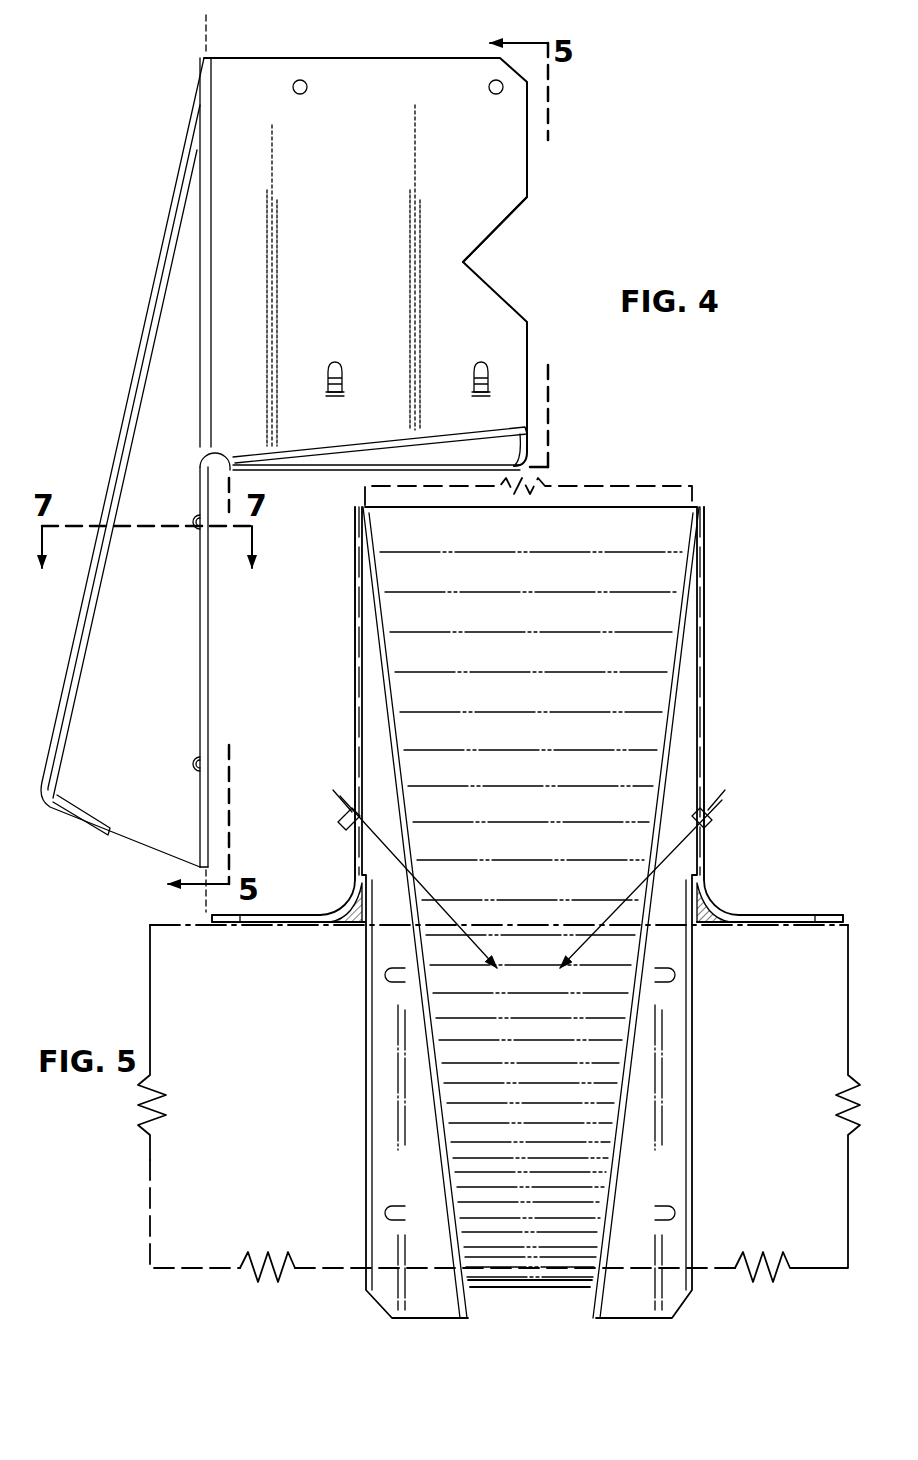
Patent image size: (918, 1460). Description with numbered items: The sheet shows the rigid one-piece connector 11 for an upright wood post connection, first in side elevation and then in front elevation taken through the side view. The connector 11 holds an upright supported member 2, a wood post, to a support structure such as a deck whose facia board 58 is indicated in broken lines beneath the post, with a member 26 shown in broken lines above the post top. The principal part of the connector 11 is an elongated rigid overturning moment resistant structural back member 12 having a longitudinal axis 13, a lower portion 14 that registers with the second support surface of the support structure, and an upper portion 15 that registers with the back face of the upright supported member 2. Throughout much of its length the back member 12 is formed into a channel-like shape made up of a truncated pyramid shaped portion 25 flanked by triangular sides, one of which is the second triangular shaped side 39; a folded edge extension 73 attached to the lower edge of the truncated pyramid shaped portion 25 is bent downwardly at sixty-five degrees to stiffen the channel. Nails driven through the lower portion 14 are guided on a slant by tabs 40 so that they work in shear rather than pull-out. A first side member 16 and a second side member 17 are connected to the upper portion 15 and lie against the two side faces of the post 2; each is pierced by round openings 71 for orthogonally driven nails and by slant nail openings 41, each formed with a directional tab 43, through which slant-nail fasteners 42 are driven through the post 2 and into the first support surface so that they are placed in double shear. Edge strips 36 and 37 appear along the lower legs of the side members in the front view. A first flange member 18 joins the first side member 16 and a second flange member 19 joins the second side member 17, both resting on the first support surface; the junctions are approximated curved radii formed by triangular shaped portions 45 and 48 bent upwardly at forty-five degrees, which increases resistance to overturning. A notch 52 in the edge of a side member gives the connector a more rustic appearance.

In FIG. 5, the upright supported member 2 is at (675, 482).
In FIG. 4, the rigid one-piece connector 11 is at (532, 172).
In FIG. 5, the rigid one-piece connector 11 is at (712, 518).
In FIG. 4, the elongated rigid overturning moment resistant structural back member 12 is at (162, 238).
In FIG. 5, the elongated rigid overturning moment resistant structural back member 12 is at (622, 697).
In FIG. 4, the longitudinal axis 13 is at (205, 43).
In FIG. 5, the lower portion 14 is at (540, 1210).
In FIG. 5, the upper portion 15 is at (540, 587).
In FIG. 5, the first side member 16 is at (703, 598).
In FIG. 4, the second side member 17 is at (346, 241).
In FIG. 5, the second side member 17 is at (356, 606).
In FIG. 5, the first flange member 18 is at (790, 912).
In FIG. 4, the second flange member 19 is at (372, 462).
In FIG. 5, the second flange member 19 is at (283, 915).
In FIG. 5, the truncated pyramid shaped portion 25 is at (540, 783).
In FIG. 5, the top plate 26 is at (600, 505).
In FIG. 5, the right leg strip 36 is at (684, 1108).
In FIG. 4, the left leg strip 37 is at (208, 662).
In FIG. 5, the left leg strip 37 is at (383, 1073).
In FIG. 4, the second triangular shaped side 39 is at (155, 669).
In FIG. 4, the tab 40 is at (194, 520).
In FIG. 5, the tab 40 is at (390, 968).
In FIG. 4, the slant nail opening 41 is at (335, 362).
In FIG. 5, the slant nail opening 41 is at (542, 865).
In FIG. 5, the slant-nail fastener 42 is at (393, 848).
In FIG. 4, the directional tab 43 is at (326, 394).
In FIG. 5, the directional tab 43 is at (340, 826).
In FIG. 5, the triangular shaped portion 45 is at (725, 902).
In FIG. 5, the triangular shaped portion 48 is at (342, 905).
In FIG. 4, the notch 52 is at (498, 222).
In FIG. 5, the facia board 58 is at (148, 1163).
In FIG. 4, the opening 71 is at (488, 87).
In FIG. 4, the folded edge extension 73 is at (72, 818).
In FIG. 5, the folded edge extension 73 is at (494, 1283).